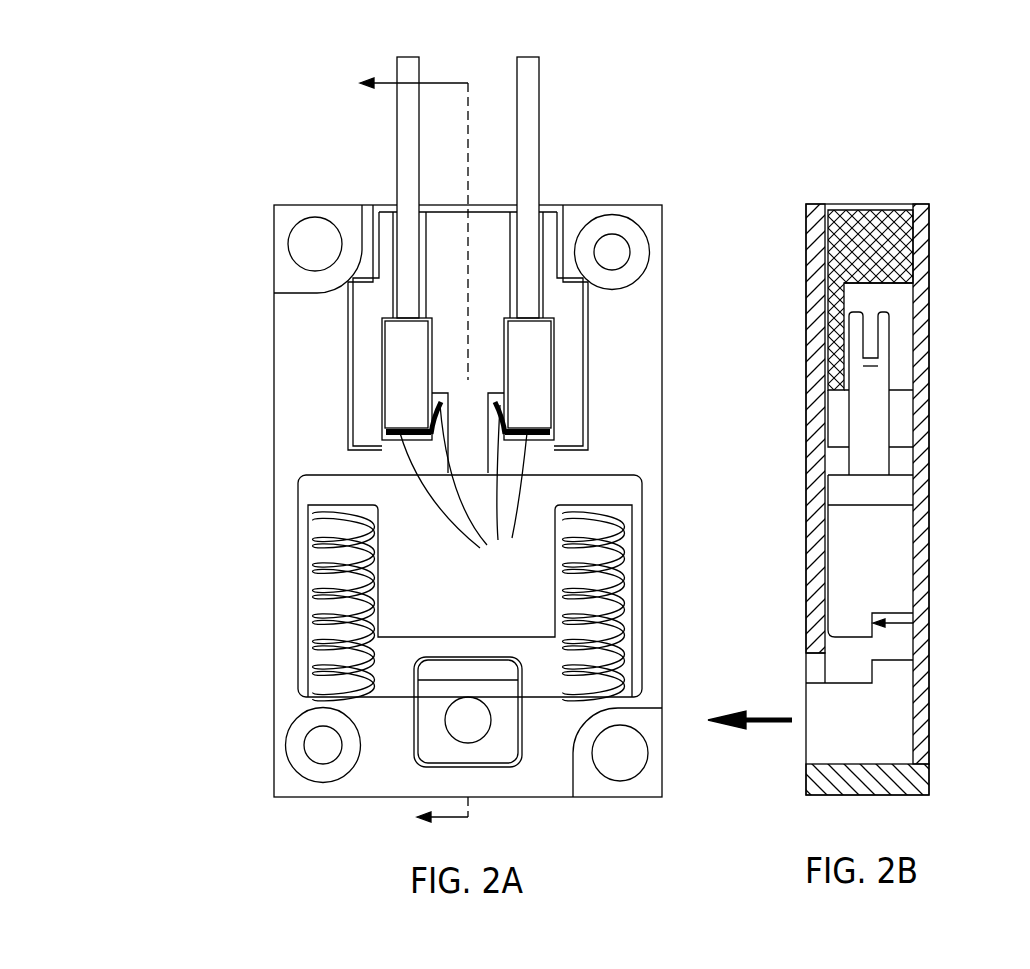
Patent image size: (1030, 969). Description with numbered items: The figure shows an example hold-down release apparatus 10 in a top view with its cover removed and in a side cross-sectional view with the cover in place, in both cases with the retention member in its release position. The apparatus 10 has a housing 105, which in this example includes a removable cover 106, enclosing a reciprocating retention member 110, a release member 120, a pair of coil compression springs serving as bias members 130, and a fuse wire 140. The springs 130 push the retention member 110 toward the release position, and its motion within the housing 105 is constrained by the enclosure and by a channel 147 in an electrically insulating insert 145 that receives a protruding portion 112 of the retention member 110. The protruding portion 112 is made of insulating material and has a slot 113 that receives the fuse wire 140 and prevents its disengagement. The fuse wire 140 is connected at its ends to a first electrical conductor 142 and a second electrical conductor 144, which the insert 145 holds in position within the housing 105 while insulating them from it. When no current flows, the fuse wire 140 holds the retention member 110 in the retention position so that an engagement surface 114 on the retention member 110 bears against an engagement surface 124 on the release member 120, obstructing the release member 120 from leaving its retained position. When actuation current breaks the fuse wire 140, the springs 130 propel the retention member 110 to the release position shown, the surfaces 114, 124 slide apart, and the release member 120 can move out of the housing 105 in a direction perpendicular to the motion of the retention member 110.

In FIG. 2A, the hold-down release apparatus 10 is at (190, 132).
In FIG. 2B, the hold-down release apparatus 10 is at (768, 167).
In FIG. 2A, the housing 105 is at (305, 387).
In FIG. 2B, the housing 105 is at (921, 393).
In FIG. 2B, the cover 106 is at (818, 268).
In FIG. 2A, the retention member 110 is at (470, 586).
In FIG. 2B, the retention member 110 is at (873, 560).
In FIG. 2A, the protruding portion 112 is at (478, 412).
In FIG. 2B, the protruding portion 112 is at (852, 393).
In FIG. 2B, the slot 113 is at (868, 341).
In FIG. 2B, the engagement surface 114 is at (913, 623).
In FIG. 2A, the release member 120 is at (493, 750).
In FIG. 2B, the release member 120 is at (878, 722).
In FIG. 2A, the engagement surface 124 is at (470, 668).
In FIG. 2B, the engagement surface 124 is at (860, 670).
In FIG. 2A, the bias members 130 is at (335, 630).
In FIG. 2A, the fuse wire 140 is at (463, 487).
In FIG. 2A, the first electrical conductor 142 is at (405, 150).
In FIG. 2A, the second electrical conductor 144 is at (535, 133).
In FIG. 2A, the insert 145 is at (448, 235).
In FIG. 2B, the insert 145 is at (864, 240).
In FIG. 2B, the channel 147 is at (900, 303).